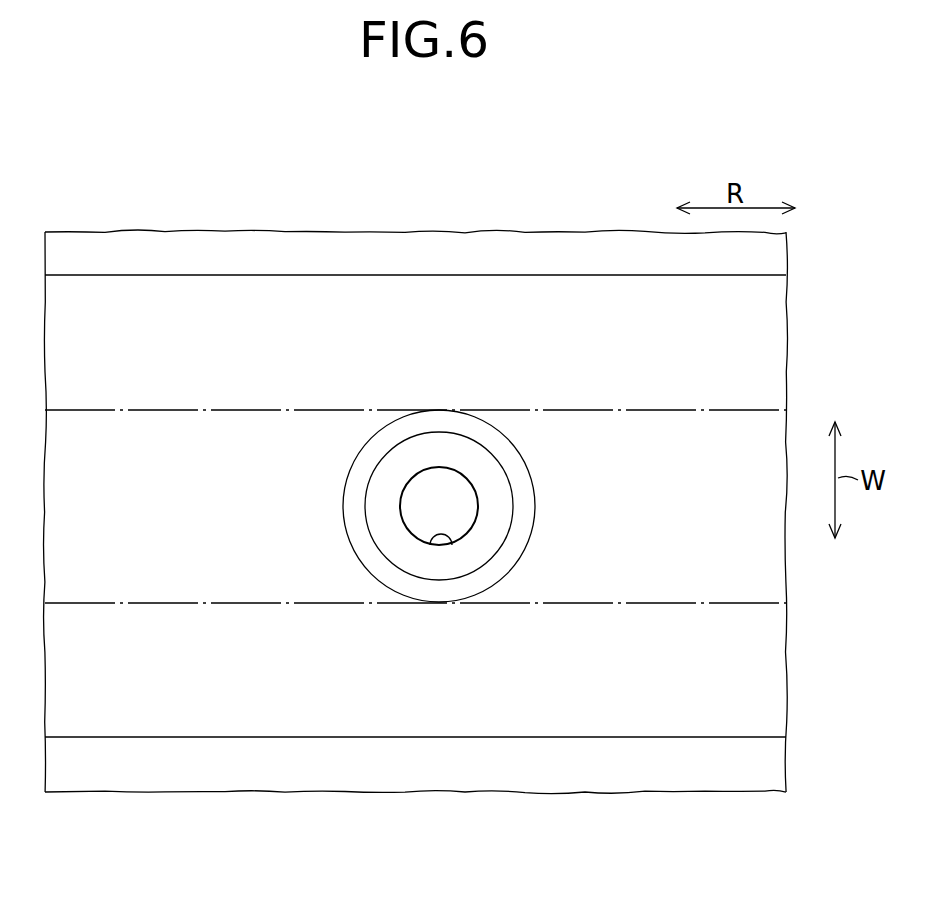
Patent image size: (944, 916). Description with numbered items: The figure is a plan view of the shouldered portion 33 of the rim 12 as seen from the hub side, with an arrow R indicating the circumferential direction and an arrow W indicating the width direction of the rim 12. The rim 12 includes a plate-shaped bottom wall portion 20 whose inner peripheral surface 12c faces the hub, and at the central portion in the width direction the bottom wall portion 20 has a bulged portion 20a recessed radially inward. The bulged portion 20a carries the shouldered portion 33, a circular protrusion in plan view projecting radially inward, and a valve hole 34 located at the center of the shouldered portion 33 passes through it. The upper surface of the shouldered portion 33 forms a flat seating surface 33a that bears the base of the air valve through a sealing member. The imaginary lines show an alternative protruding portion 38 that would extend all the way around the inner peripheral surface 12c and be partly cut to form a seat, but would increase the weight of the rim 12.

The rim 12 is at (252, 231).
The inner peripheral surface 12c is at (568, 482).
The bottom wall portion 20 is at (443, 231).
The bulged portion 20a is at (361, 350).
The shouldered portion 33 is at (413, 571).
The seating surface 33a is at (392, 548).
The valve hole 34 is at (448, 546).
The protruding portion 38 is at (272, 604).